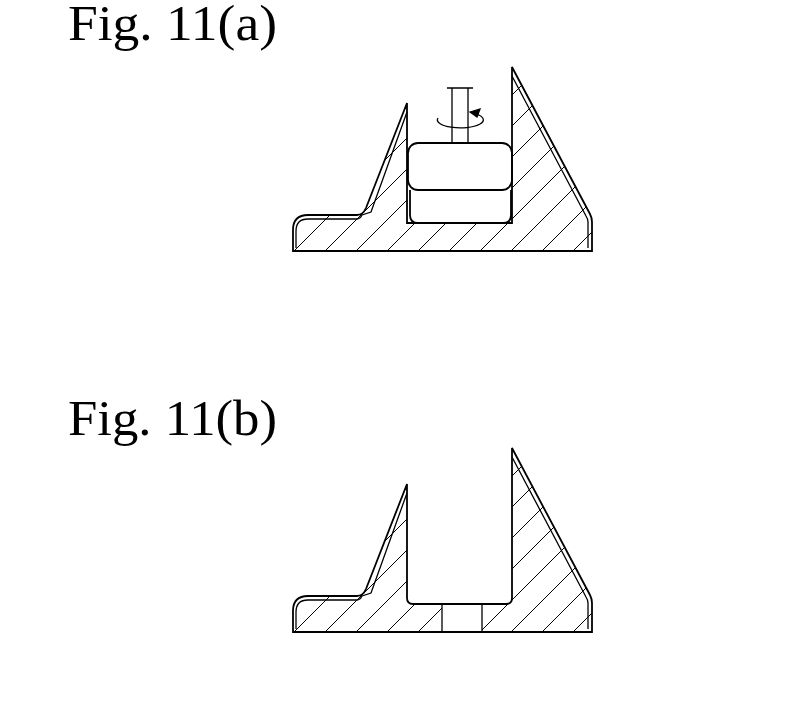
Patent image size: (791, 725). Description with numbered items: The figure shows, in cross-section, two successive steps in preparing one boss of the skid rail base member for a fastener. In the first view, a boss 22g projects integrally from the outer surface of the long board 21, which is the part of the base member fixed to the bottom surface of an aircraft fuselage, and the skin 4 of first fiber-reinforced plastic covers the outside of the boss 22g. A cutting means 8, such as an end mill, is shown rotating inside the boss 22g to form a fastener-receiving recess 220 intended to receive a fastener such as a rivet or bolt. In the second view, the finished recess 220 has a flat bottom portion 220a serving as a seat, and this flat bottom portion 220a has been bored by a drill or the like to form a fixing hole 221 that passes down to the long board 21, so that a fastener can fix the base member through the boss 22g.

In FIG. 11A, the skin 4 is at (536, 110).
In FIG. 11A, the cutting means 8 is at (433, 133).
In FIG. 11A, the long board 21 is at (408, 240).
In FIG. 11A, the boss 22g is at (535, 167).
In FIG. 11A, the recess 220 is at (480, 212).
In FIG. 11B, the flat bottom portion 220a is at (429, 602).
In FIG. 11B, the fixing hole 221 is at (462, 622).